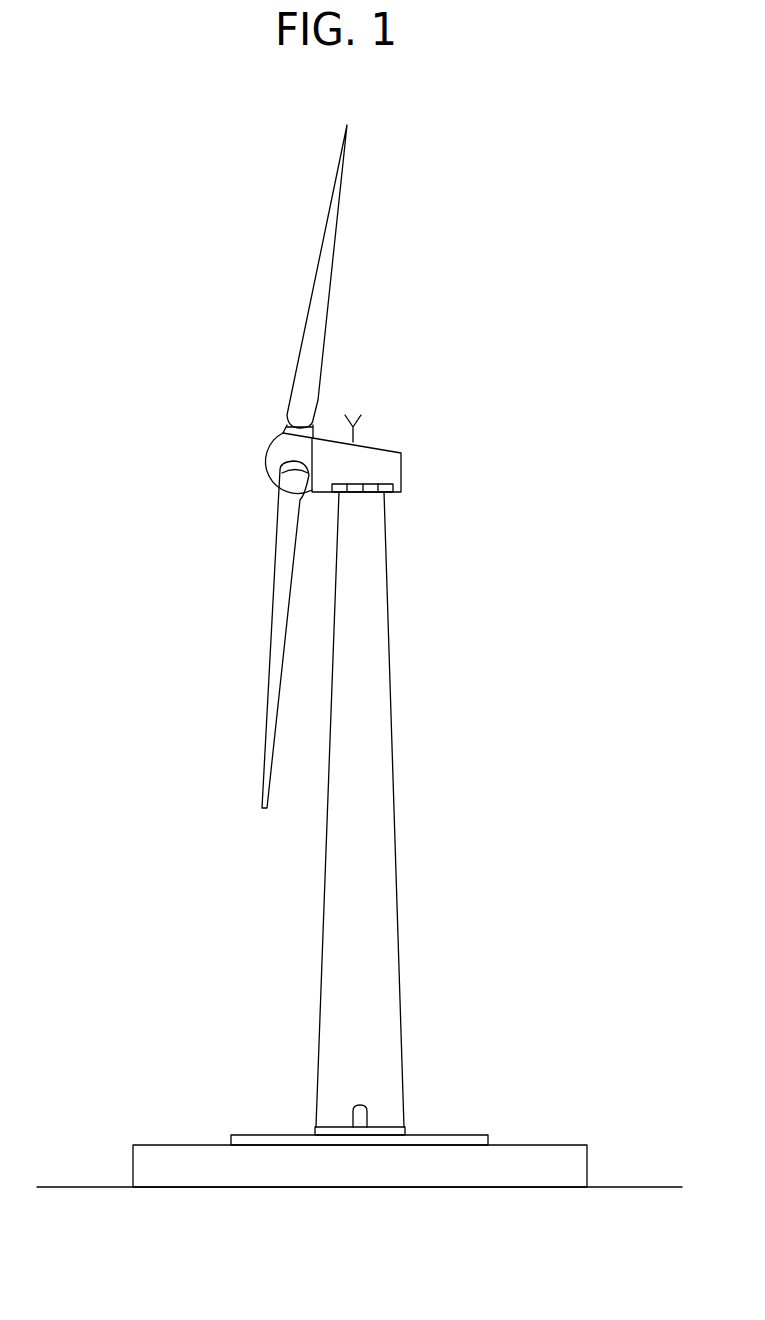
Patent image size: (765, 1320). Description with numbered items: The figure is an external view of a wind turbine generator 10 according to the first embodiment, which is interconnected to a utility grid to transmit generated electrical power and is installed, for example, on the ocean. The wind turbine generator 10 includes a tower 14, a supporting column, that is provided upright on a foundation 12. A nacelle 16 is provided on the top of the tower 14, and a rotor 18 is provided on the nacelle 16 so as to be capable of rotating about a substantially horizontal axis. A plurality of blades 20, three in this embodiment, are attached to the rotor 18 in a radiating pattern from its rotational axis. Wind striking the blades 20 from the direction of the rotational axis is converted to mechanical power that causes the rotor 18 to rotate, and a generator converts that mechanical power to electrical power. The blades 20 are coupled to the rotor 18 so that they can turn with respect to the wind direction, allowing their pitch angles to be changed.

The wind turbine generator 10 is at (507, 402).
The foundation 12 is at (552, 1145).
The tower 14 is at (390, 667).
The nacelle 16 is at (372, 447).
The rotor 18 is at (258, 462).
The blades 20 is at (338, 227).